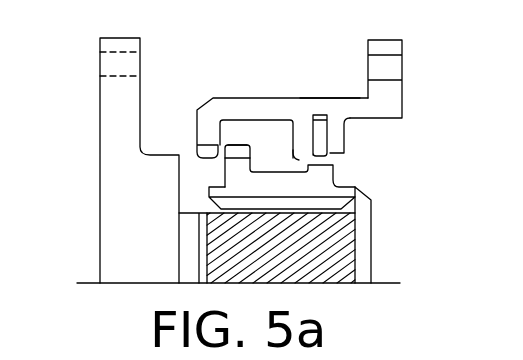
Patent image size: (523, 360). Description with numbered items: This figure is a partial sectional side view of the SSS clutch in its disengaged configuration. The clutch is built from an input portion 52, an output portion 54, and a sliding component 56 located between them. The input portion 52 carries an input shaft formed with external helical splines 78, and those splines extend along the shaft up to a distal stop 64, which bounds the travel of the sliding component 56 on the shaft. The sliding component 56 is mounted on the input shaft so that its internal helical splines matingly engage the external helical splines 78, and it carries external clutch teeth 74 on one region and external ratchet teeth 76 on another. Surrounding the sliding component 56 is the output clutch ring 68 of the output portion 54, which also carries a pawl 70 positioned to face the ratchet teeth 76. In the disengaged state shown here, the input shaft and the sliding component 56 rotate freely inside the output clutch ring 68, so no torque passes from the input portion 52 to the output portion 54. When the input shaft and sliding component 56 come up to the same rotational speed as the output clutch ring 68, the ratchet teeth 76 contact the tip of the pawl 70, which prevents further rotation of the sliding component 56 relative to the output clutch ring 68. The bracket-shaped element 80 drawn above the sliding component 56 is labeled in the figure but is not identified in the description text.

The first housing wall 52 is at (100, 103).
The second housing wall 54 is at (402, 92).
The carrier body 56 is at (337, 180).
The support ring 64 is at (360, 217).
The bracket top surface 68 is at (338, 98).
The pin 70 is at (323, 138).
The left tab 74 is at (237, 152).
The right slot 76 is at (298, 153).
The elastomeric element 78 is at (333, 230).
The bracket 80 is at (197, 152).